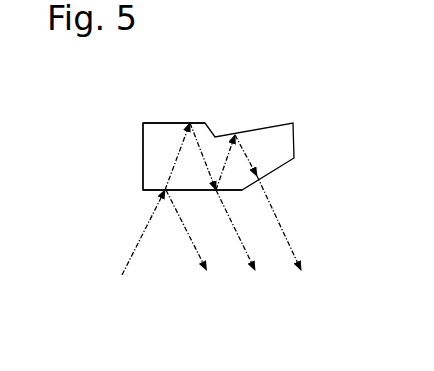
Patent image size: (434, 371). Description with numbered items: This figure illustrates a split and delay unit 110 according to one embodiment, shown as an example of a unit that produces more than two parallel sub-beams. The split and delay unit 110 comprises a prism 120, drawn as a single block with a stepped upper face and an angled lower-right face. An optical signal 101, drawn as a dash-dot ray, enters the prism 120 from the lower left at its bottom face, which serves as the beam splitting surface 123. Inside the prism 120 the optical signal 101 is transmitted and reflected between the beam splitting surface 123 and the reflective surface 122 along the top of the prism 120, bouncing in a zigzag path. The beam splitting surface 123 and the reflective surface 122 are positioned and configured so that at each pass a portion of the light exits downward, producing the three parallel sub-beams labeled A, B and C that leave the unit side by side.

The split and delay unit 110 is at (300, 100).
The prism 120 is at (142, 170).
The reflective surface 122 is at (175, 122).
The beam splitting surface 123 is at (155, 191).
The optical signal 101 is at (130, 263).